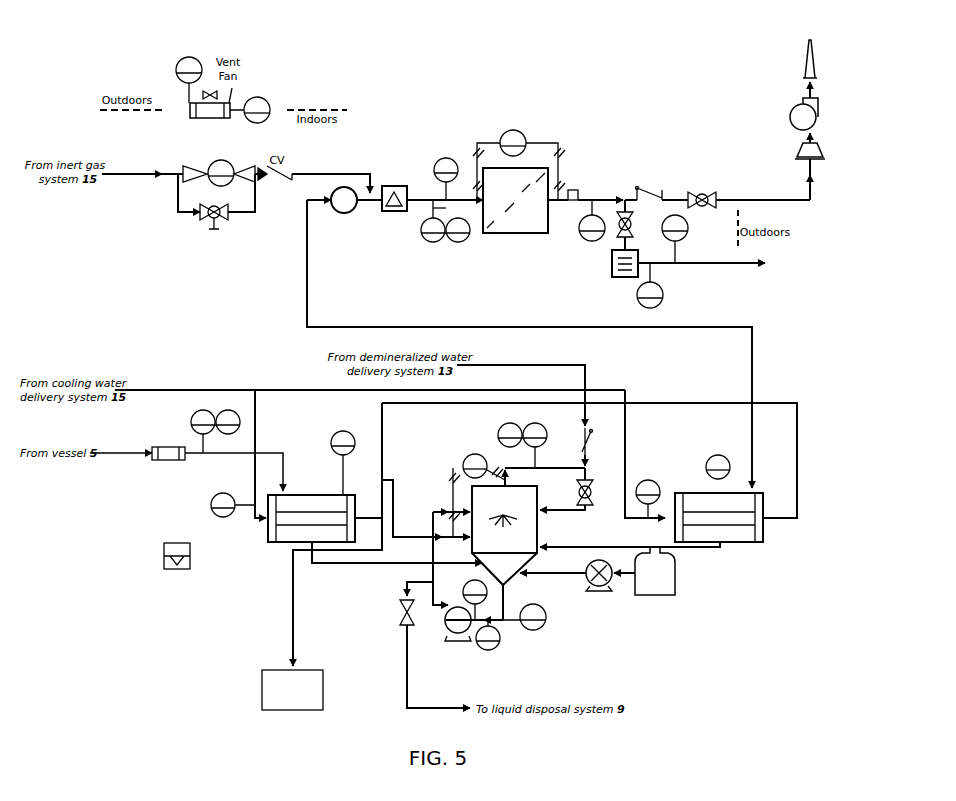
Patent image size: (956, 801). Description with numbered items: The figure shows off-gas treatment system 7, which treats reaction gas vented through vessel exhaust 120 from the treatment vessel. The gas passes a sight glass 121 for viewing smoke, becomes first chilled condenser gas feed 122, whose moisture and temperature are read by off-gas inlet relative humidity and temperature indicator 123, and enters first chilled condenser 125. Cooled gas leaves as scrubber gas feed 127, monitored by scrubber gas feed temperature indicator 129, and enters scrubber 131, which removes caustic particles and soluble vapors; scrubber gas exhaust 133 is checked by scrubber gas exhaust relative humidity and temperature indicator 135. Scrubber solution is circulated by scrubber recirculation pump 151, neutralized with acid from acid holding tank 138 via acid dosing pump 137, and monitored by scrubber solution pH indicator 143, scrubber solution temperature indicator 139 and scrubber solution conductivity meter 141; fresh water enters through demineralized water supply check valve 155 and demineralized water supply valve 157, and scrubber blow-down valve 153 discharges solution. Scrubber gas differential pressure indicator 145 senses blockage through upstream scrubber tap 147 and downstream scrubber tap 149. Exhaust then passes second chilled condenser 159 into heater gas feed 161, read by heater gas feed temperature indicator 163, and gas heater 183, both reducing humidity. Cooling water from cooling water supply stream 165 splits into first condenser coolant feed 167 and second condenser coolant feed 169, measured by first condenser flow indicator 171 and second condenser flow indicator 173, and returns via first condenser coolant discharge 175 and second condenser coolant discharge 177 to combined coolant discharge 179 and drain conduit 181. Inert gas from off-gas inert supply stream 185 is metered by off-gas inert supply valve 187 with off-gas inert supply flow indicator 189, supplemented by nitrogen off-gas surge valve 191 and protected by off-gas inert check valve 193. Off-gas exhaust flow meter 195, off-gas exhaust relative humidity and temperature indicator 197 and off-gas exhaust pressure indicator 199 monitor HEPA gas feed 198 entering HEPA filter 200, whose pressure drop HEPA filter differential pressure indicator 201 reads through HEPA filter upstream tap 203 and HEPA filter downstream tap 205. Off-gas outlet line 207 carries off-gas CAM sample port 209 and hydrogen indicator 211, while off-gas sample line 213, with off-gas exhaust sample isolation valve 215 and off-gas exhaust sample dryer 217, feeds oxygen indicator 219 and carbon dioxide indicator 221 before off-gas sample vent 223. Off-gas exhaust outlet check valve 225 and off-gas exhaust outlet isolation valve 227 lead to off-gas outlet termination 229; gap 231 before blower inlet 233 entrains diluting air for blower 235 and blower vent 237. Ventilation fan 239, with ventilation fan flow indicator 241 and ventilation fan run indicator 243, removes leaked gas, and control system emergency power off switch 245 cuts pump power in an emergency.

The off-gas treatment system 7 is at (637, 110).
The vessel exhaust 120 is at (115, 456).
The sight glass 121 is at (165, 462).
The first chilled condenser gas feed 122 is at (225, 456).
The off-gas inlet relative humidity indicator 123 is at (190, 426).
The first chilled condenser 125 is at (305, 492).
The scrubber gas feed 127 is at (398, 516).
The scrubber gas feed temperature indicator 129 is at (332, 438).
The scrubber 131 is at (545, 530).
The scrubber gas exhaust 133 is at (572, 472).
The scrubber gas exhaust relative humidity indicator 135 is at (545, 430).
The acid dosing pump 137 is at (602, 590).
The acid holding tank 138 is at (665, 598).
The scrubber solution temperature indicator 139 is at (500, 648).
The scrubber solution conductivity meter 141 is at (545, 627).
The scrubber solution pH indicator 143 is at (456, 588).
The scrubber gas differential pressure indicator 145 is at (469, 460).
The upstream scrubber tap 147 is at (450, 488).
The downstream scrubber tap 149 is at (495, 462).
The scrubber recirculation pump 151 is at (455, 637).
The scrubber blow-down valve 153 is at (400, 620).
The demineralized water supply check valve 155 is at (590, 439).
The demineralized water supply valve 157 is at (593, 498).
The second chilled condenser 159 is at (745, 545).
The heater gas feed 161 is at (755, 432).
The heater gas feed temperature indicator 163 is at (710, 456).
The cooling water supply stream 165 is at (156, 389).
The first condenser coolant feed 167 is at (258, 432).
The second condenser coolant feed 169 is at (628, 436).
The first condenser flow indicator 171 is at (226, 518).
The second condenser flow indicator 173 is at (658, 490).
The first condenser coolant discharge 175 is at (368, 508).
The second condenser coolant discharge 177 is at (797, 522).
The combined coolant discharge 179 is at (295, 622).
The drain conduit 181 is at (262, 676).
The gas heater 183 is at (348, 213).
The off-gas inert supply stream 185 is at (118, 178).
The off-gas inert supply valve 187 is at (197, 168).
The off-gas inert supply flow indicator 189 is at (238, 166).
The nitrogen off-gas surge valve 191 is at (228, 220).
The off-gas inert check valve 193 is at (305, 172).
The off-gas exhaust flow meter 195 is at (400, 187).
The off-gas exhaust relative humidity indicator 197 is at (436, 244).
The HEPA gas feed 198 is at (461, 208).
The off-gas exhaust pressure indicator 199 is at (440, 156).
The HEPA filter 200 is at (520, 236).
The HEPA filter differential pressure indicator 201 is at (510, 131).
The HEPA filter upstream tap 203 is at (474, 148).
The HEPA filter downstream tap 205 is at (560, 160).
The off-gas outlet line 207 is at (557, 205).
The off-gas CAM sample port 209 is at (575, 192).
The hydrogen indicator 211 is at (590, 244).
The off-gas sample line 213 is at (617, 214).
The sample valve 215 is at (632, 236).
The off-gas exhaust sample dryer 217 is at (620, 278).
The oxygen indicator 219 is at (663, 293).
The carbon dioxide indicator 221 is at (690, 232).
The off-gas sample vent 223 is at (722, 265).
The off-gas exhaust outlet check valve 225 is at (663, 195).
The off-gas exhaust outlet isolation valve 227 is at (705, 194).
The off-gas outlet termination 229 is at (812, 200).
The gap 231 is at (805, 172).
The blower inlet 233 is at (817, 145).
The blower 235 is at (818, 112).
The blower vent 237 is at (817, 58).
The ventilation fan 239 is at (184, 105).
The ventilation fan flow indicator 241 is at (182, 58).
The ventilation fan run indicator 243 is at (263, 96).
The control system emergency power off switch 245 is at (164, 550).